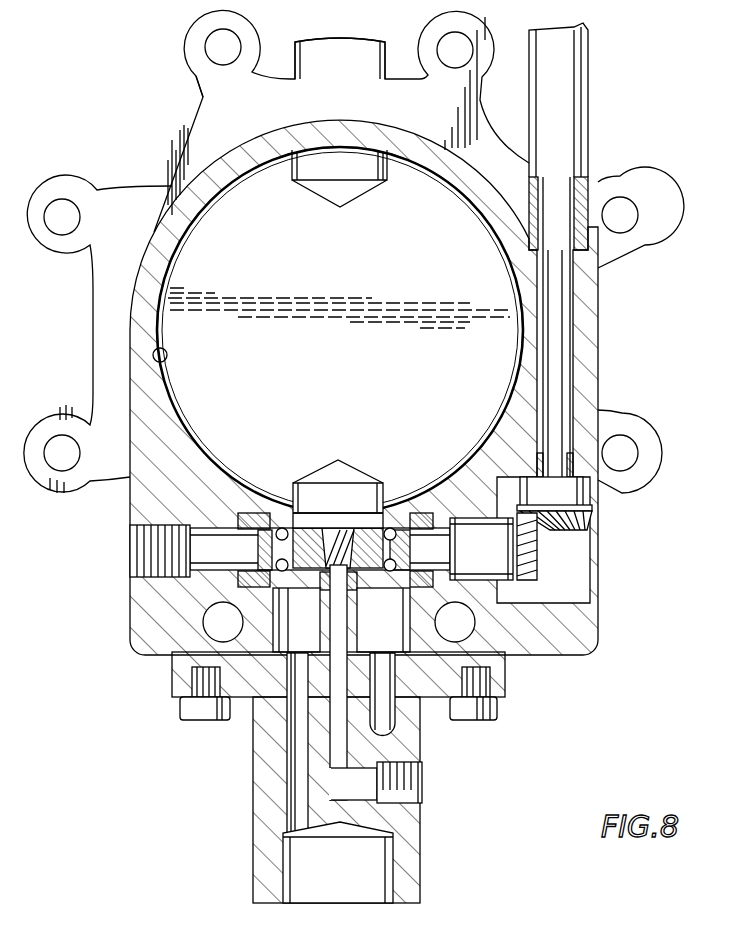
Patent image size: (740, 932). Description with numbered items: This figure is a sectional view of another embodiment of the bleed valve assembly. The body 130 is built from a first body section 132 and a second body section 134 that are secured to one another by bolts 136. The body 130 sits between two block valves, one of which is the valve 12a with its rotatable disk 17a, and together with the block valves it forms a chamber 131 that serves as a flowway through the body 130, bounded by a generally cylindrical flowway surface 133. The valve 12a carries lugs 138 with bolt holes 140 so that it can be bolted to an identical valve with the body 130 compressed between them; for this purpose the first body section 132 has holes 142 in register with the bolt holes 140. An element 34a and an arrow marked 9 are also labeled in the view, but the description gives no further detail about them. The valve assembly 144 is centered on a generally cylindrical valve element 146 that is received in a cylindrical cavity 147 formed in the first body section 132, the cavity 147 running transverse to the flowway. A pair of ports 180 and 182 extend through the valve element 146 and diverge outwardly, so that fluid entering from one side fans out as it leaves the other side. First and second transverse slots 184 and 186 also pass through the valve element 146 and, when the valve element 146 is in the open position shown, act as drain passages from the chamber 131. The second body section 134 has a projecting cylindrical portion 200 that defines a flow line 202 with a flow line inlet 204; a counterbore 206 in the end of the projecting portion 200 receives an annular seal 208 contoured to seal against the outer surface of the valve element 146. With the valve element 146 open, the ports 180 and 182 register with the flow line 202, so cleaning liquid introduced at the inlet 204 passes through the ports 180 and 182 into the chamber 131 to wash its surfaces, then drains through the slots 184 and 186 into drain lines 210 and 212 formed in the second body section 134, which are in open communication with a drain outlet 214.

The lugs 138 is at (197, 30).
The bolt holes 140 is at (212, 50).
The boss 34a is at (366, 45).
The valve 12a is at (152, 129).
The rotatable disk 17a is at (200, 246).
The first body section 132 is at (143, 297).
The cylindrical flowway surface 133 is at (153, 355).
The chamber 131 is at (272, 355).
The body 130 is at (117, 508).
The valve element 146 is at (294, 520).
The first transverse slot 184 is at (274, 524).
The port 180 is at (343, 497).
The port 182 is at (364, 524).
The valve assembly 144 is at (396, 520).
The second transverse slot 186 is at (413, 524).
The cylindrical cavity 147 is at (392, 512).
The counterbore 206 is at (355, 587).
The annular seal 208 is at (212, 632).
The holes 142 is at (320, 628).
The projecting cylindrical portion 200 is at (325, 580).
The bolts 136 is at (187, 713).
The drain line 212 is at (253, 765).
The flow line 202 is at (333, 765).
The second body section 134 is at (493, 677).
The drain line 210 is at (391, 723).
The flow line inlet 204 is at (400, 806).
The drain outlet 214 is at (370, 883).
The section line 9 is at (337, 440).